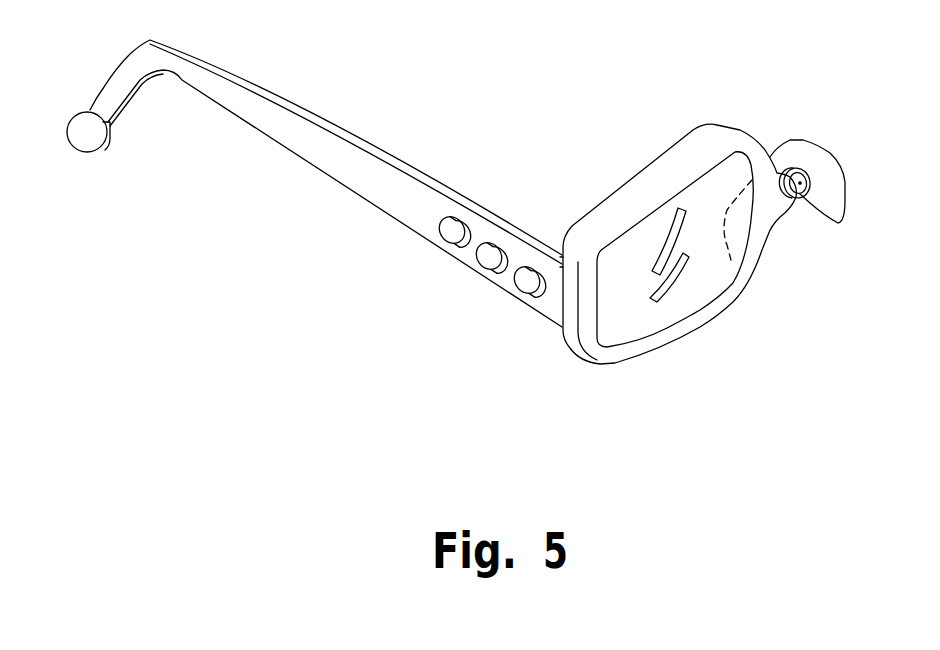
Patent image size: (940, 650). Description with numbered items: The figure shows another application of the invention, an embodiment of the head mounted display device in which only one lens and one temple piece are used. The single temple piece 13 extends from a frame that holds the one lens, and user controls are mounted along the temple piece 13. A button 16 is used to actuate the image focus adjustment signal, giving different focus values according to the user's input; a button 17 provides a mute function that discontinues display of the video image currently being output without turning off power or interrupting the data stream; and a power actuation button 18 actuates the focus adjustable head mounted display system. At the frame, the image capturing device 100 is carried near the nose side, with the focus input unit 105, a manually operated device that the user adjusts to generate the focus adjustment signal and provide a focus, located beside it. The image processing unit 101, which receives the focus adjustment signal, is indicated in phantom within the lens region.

The temple piece 13 is at (282, 128).
The button 16 is at (448, 231).
The button 17 is at (485, 259).
The power actuation button 18 is at (525, 283).
The image capturing device 100 is at (810, 183).
The image processing unit 101 is at (732, 242).
The focus input unit 105 is at (800, 198).